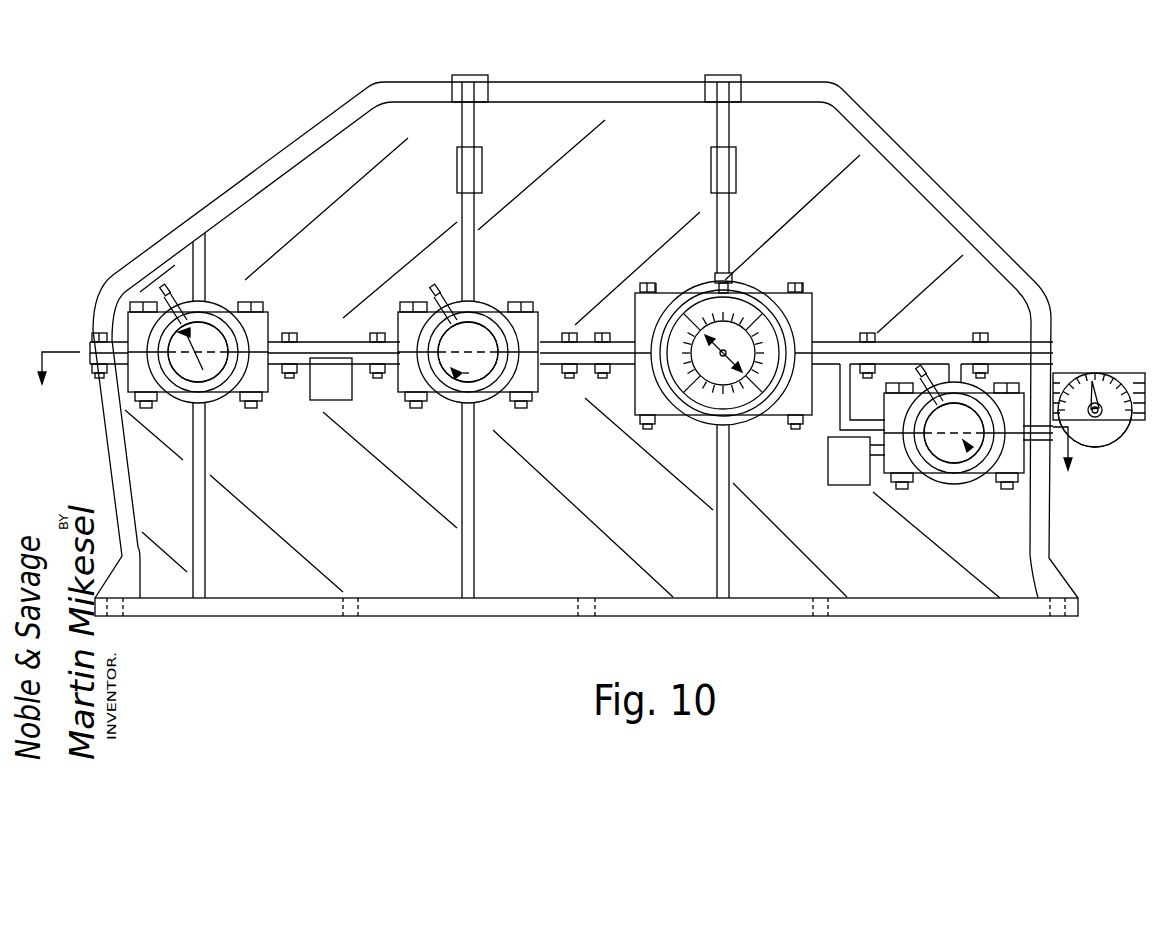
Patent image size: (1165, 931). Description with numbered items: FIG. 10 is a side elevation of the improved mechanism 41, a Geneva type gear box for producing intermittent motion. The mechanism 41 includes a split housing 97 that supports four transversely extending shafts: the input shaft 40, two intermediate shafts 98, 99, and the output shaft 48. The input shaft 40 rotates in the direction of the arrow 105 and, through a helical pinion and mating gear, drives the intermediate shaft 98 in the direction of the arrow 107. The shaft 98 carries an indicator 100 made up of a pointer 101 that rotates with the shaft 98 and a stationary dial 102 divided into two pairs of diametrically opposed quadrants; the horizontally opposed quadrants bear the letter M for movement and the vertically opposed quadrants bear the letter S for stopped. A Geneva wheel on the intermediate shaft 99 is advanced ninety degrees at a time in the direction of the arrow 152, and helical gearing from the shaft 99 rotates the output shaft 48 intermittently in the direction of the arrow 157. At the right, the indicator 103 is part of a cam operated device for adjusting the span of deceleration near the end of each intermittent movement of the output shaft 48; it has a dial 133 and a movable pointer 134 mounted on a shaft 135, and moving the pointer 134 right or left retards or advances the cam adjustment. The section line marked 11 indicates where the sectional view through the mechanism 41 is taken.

The mechanism 41 is at (954, 147).
The split housing 97 is at (990, 250).
The output shaft 48 is at (215, 342).
The arrow 157 is at (198, 352).
The intermediate shaft 99 is at (473, 337).
The arrow 152 is at (460, 374).
The intermediate shaft 98 is at (708, 308).
The arrow 107 is at (732, 326).
The pointer 101 is at (713, 347).
The indicator 100 is at (704, 407).
The stationary dial 102 is at (750, 396).
The indicator 103 is at (1090, 366).
The movable pointer 134 is at (1100, 393).
The shaft 135 is at (1094, 418).
The dial 133 is at (1125, 421).
The input shaft 40 is at (945, 455).
The arrow 105 is at (969, 450).
The section line 11- 11 is at (548, 429).